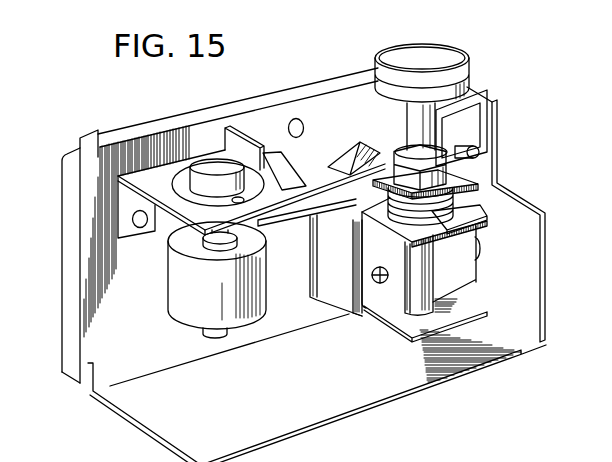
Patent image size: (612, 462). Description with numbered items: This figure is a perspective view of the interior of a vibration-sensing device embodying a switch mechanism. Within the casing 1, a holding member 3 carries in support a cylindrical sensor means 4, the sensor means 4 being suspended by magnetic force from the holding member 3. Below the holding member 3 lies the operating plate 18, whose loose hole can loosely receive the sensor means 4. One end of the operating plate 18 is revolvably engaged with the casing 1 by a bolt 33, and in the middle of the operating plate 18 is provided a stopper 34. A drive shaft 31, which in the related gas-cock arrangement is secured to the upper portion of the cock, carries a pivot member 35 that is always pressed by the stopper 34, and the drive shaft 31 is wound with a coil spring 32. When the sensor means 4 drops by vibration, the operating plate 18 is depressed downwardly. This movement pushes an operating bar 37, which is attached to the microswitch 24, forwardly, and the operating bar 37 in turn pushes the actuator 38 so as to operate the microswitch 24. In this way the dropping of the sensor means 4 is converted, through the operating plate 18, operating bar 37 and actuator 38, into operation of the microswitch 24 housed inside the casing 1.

The casing 1 is at (60, 189).
The holding member 3 is at (182, 190).
The sensor means 4 is at (168, 282).
The operating plate 18 is at (313, 160).
The microswitch 24 is at (333, 287).
The drive shaft 31 is at (447, 121).
The coil spring 32 is at (483, 232).
The bolt 33 is at (483, 148).
The stopper 34 is at (361, 143).
The pivot member 35 is at (463, 100).
The operating bar 37 is at (305, 210).
The actuator 38 is at (345, 232).